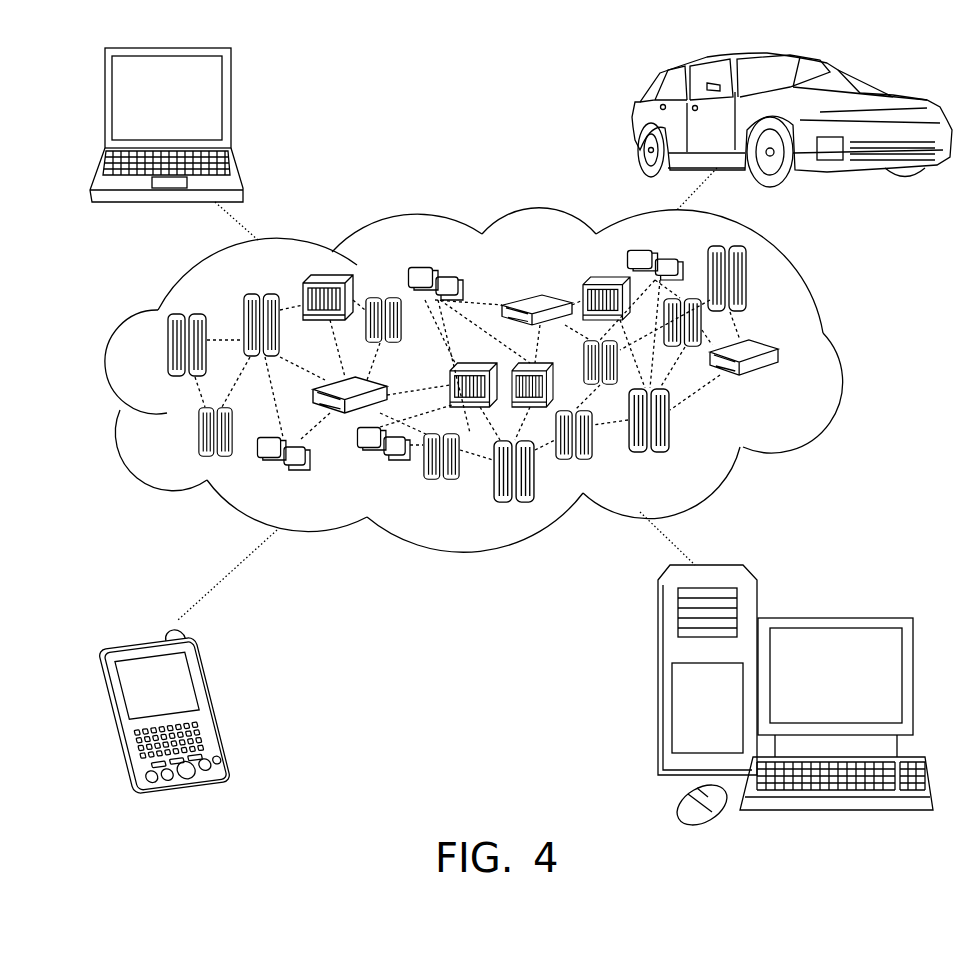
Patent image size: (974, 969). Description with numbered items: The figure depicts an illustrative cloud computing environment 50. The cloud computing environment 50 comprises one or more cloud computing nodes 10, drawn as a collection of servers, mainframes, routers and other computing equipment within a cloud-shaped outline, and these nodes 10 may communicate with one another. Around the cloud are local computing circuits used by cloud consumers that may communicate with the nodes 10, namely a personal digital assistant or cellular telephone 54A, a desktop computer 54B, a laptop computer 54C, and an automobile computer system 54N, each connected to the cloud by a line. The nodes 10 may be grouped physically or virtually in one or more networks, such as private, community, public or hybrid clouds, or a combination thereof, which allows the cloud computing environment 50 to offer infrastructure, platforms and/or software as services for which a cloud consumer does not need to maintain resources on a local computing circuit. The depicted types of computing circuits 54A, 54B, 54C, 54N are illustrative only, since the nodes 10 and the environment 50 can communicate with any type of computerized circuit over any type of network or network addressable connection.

The cloud computing node 10 is at (783, 383).
The cloud computing environment 50 is at (499, 380).
The personal digital assistant or cellular telephone 54A is at (217, 700).
The desktop computer 54B is at (832, 615).
The laptop computer 54C is at (232, 108).
The automobile computer system 54N is at (632, 122).